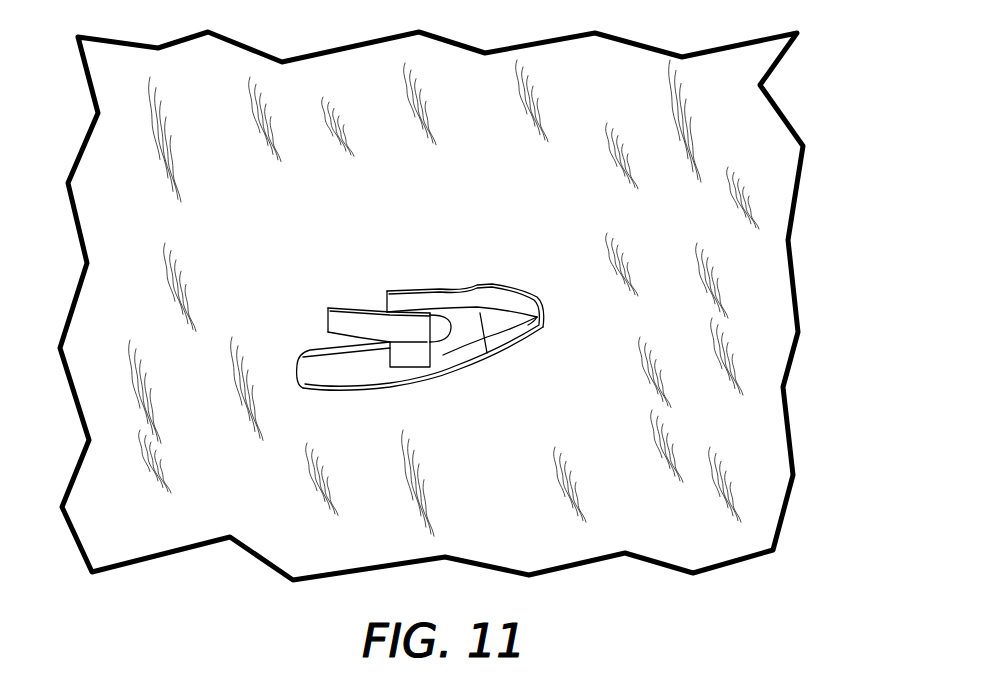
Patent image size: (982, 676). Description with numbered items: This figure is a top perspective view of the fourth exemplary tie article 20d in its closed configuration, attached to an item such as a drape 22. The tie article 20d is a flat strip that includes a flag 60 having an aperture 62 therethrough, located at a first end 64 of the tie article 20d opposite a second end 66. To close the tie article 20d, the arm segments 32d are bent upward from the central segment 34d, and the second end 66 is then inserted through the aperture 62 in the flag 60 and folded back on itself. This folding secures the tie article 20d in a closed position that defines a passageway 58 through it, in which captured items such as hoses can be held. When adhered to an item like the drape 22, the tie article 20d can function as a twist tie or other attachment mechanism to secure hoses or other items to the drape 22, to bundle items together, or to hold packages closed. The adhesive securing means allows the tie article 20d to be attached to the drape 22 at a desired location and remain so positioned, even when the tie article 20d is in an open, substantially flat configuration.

The drape 22 is at (482, 135).
The tie article 20d is at (428, 322).
The arm segments 32d is at (354, 294).
The central segment 34d is at (441, 362).
The passageway 58 is at (493, 320).
The flag 60 is at (467, 345).
The aperture 62 is at (438, 340).
The first end 64 is at (387, 303).
The second end 66 is at (328, 320).